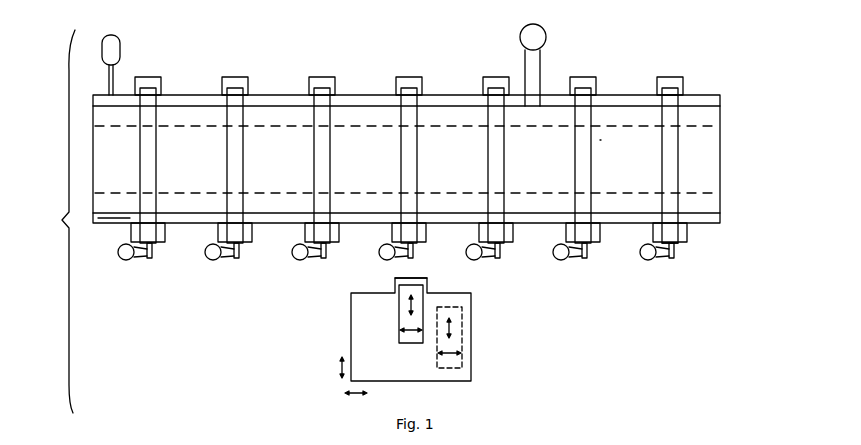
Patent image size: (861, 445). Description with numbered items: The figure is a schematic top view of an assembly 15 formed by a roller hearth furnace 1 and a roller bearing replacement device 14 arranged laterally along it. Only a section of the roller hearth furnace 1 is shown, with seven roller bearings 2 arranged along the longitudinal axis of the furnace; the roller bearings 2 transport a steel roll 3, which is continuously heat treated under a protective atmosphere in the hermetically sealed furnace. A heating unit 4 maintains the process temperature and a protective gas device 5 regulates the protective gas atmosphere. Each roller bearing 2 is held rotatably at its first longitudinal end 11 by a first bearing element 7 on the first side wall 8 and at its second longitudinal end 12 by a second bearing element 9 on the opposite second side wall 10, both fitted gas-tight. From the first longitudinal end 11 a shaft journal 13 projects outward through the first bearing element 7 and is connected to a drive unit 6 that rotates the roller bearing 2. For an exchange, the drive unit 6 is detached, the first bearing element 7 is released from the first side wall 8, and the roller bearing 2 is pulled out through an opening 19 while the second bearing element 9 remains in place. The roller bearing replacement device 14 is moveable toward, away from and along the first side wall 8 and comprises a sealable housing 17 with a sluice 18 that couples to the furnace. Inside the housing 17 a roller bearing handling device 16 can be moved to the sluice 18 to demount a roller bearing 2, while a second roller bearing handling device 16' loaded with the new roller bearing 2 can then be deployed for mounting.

The roller hearth furnace 1 is at (272, 70).
The roller bearing 2 is at (672, 165).
The steel roll 3 is at (620, 155).
The heating unit 4 is at (120, 50).
The protective gas device 5 is at (547, 37).
The drive unit 6 is at (645, 248).
The first bearing element 7 is at (690, 233).
The first side wall 8 is at (198, 218).
The second bearing element 9 is at (672, 77).
The second side wall 10 is at (200, 103).
The first longitudinal end 11 is at (677, 243).
The second longitudinal end 12 is at (668, 100).
The shaft journal 13 is at (673, 256).
The roller bearing replacement device 14 is at (474, 375).
The assembly 15 is at (57, 221).
The roller bearing handling device 16 is at (350, 316).
The roller bearing handling device 16' is at (485, 337).
The housing 17 is at (351, 337).
The sluice 18 is at (427, 281).
The opening 19 is at (126, 218).